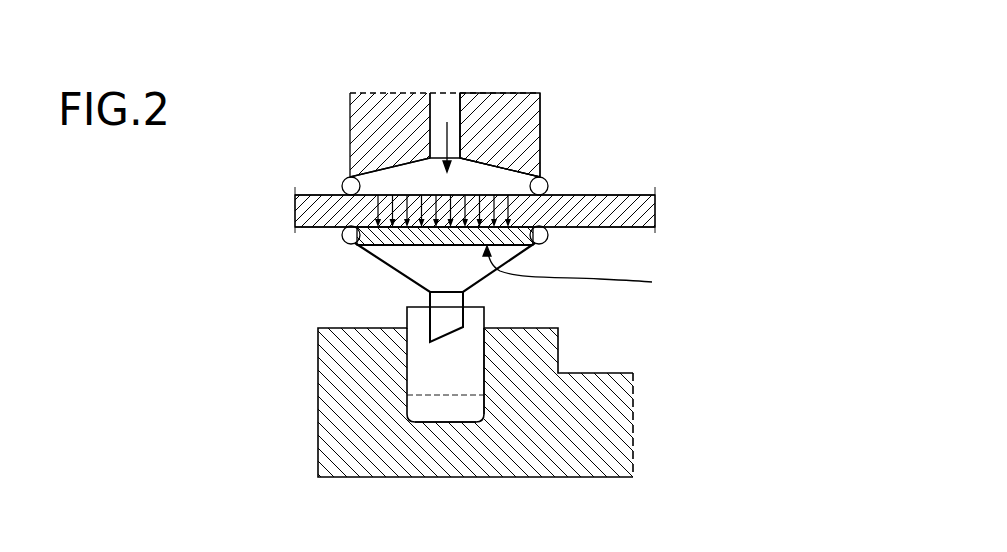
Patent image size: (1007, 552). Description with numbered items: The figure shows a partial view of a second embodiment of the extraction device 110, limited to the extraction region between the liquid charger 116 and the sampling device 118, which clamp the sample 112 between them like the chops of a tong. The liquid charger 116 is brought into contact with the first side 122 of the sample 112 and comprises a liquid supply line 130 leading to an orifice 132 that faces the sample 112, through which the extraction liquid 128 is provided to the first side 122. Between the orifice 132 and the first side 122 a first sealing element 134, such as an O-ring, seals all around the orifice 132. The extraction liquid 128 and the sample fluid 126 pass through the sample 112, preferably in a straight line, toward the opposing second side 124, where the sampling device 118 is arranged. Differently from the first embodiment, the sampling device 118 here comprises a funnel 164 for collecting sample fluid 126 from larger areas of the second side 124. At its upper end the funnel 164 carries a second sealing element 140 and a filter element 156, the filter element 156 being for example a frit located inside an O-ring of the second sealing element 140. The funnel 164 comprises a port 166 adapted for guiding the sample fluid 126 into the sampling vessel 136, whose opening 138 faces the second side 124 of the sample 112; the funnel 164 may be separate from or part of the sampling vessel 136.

The extraction device 110 is at (512, 62).
The sample 112 is at (308, 212).
The liquid charger 116 is at (352, 123).
The sampling device 118 is at (428, 296).
The first side 122 is at (623, 193).
The second side 124 is at (623, 228).
The sample fluid 126 is at (422, 412).
The extraction liquid 128 is at (445, 138).
The liquid supply line 130 is at (523, 117).
The orifice 132 is at (530, 160).
The first sealing element 134 is at (343, 183).
The sampling vessel 136 is at (485, 392).
The opening 138 is at (507, 245).
The second sealing element 140 is at (345, 243).
The filter element 156 is at (590, 270).
The funnel 164 is at (481, 280).
The port 166 is at (464, 296).